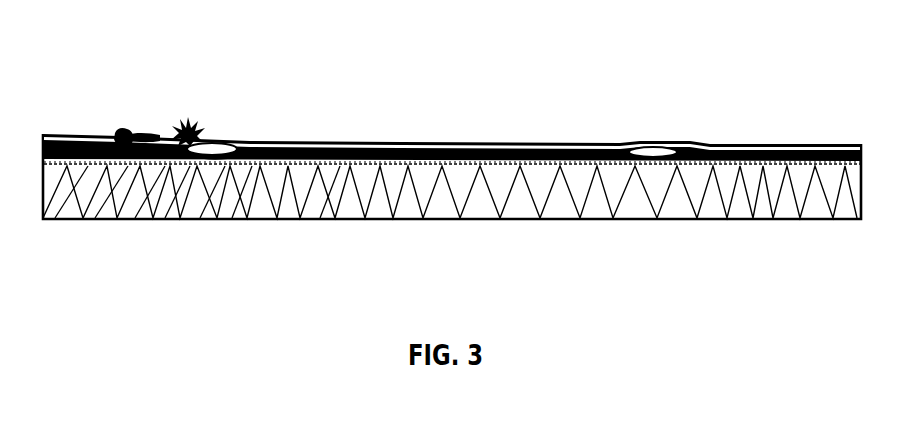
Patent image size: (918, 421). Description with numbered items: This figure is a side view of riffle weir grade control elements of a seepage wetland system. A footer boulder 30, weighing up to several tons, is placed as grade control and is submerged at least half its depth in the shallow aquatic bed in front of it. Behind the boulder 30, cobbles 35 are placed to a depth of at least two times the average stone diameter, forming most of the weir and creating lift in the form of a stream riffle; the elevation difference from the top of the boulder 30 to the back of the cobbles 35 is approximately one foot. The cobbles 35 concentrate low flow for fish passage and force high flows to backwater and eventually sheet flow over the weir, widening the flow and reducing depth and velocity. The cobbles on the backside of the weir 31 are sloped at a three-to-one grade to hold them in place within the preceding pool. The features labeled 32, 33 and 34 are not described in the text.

The boulder 30 is at (215, 143).
The cobbles on the backside of the weir 31 is at (141, 152).
The agglomerate 32 is at (115, 133).
The crack defect 33 is at (188, 117).
The coating layer 34 is at (393, 140).
The cobbles 35 is at (141, 152).